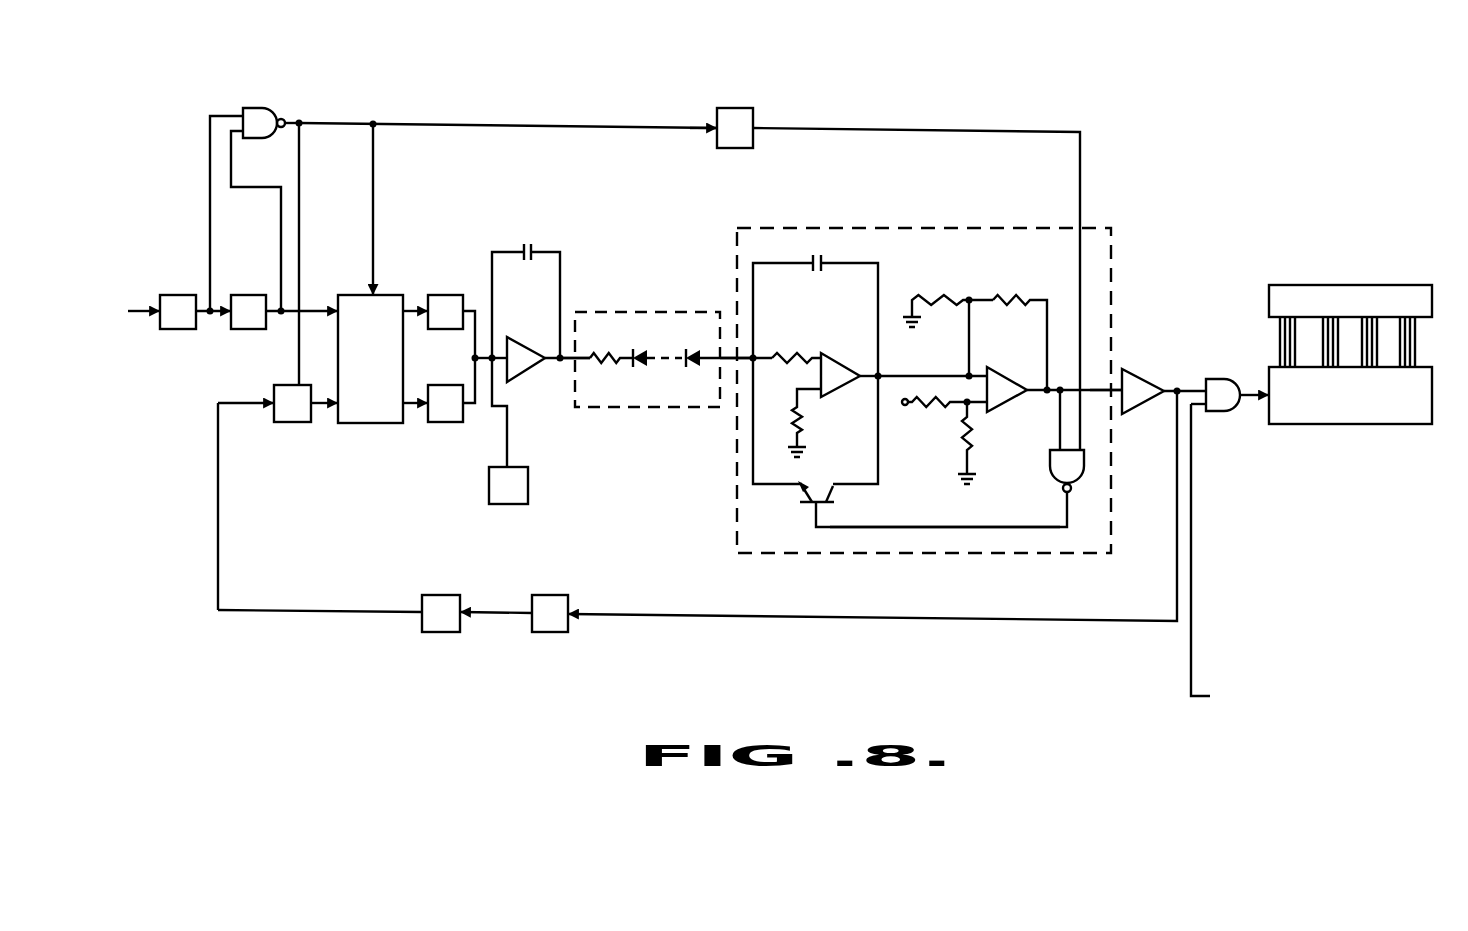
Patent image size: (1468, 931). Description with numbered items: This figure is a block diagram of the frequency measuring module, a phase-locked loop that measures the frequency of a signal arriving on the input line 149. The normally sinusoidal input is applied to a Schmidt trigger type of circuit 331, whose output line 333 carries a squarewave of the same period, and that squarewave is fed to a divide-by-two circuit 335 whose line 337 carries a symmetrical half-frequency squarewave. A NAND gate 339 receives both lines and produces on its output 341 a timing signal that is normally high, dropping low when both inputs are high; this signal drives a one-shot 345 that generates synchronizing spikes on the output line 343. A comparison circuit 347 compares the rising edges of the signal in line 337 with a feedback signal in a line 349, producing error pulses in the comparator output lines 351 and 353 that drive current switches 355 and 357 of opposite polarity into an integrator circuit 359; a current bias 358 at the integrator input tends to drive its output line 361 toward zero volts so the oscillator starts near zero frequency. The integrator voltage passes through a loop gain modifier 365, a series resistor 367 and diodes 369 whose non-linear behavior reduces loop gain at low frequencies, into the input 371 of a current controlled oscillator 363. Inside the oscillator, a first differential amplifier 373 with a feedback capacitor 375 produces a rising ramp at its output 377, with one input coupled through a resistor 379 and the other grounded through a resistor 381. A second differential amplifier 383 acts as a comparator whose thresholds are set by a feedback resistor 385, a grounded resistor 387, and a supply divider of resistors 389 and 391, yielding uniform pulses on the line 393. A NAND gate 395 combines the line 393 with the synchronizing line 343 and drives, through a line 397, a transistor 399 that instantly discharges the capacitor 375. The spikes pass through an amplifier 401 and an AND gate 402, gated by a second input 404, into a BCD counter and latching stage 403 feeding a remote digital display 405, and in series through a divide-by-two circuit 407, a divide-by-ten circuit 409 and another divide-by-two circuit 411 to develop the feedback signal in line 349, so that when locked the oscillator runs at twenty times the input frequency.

The input line 149 is at (134, 310).
The Schmidt trigger type of circuit 331 is at (180, 295).
The output line 333 is at (200, 315).
The divide-by-two circuit 335 is at (264, 330).
The line 337 is at (283, 316).
The NAND gate 339 is at (254, 108).
The output 341 is at (336, 123).
The output line 343 is at (843, 128).
The one-shot 345 is at (745, 108).
The comparison circuit 347 is at (368, 423).
The line 349 is at (333, 404).
The comparator output line 351 is at (416, 310).
The comparator output line 353 is at (416, 406).
The current switch 355 is at (455, 295).
The current switch 357 is at (462, 418).
The current bias 358 is at (528, 485).
The integrator circuit 359 is at (528, 380).
The output line 361 is at (565, 355).
The current controlled oscillator 363 is at (737, 520).
The loop gain modifier 365 is at (628, 407).
The resistor 367 is at (602, 360).
The diodes 369 is at (672, 358).
The input 371 is at (737, 350).
The first differential amplifier 373 is at (850, 350).
The feedback capacitor 375 is at (822, 263).
The output 377 is at (892, 376).
The resistor 379 is at (788, 358).
The resistor 381 is at (804, 425).
The second differential amplifier 383 is at (1000, 378).
The feedback resistor 385 is at (1003, 300).
The grounded resistor 387 is at (938, 300).
The resistor 389 is at (930, 415).
The resistor 391 is at (970, 432).
The line 393 is at (1113, 380).
The NAND gate 395 is at (1055, 470).
The line 397 is at (900, 527).
The transistor 399 is at (803, 496).
The amplifier 401 is at (1143, 410).
The AND gate 402 is at (1230, 368).
The BCD counter and latching stage 403 is at (1360, 424).
The second input 404 is at (1191, 515).
The remote digital display 405 is at (1275, 285).
The divide-by-two circuit 407 is at (567, 595).
The divide-by-ten circuit 409 is at (447, 595).
The divide-by-two circuit 411 is at (290, 423).